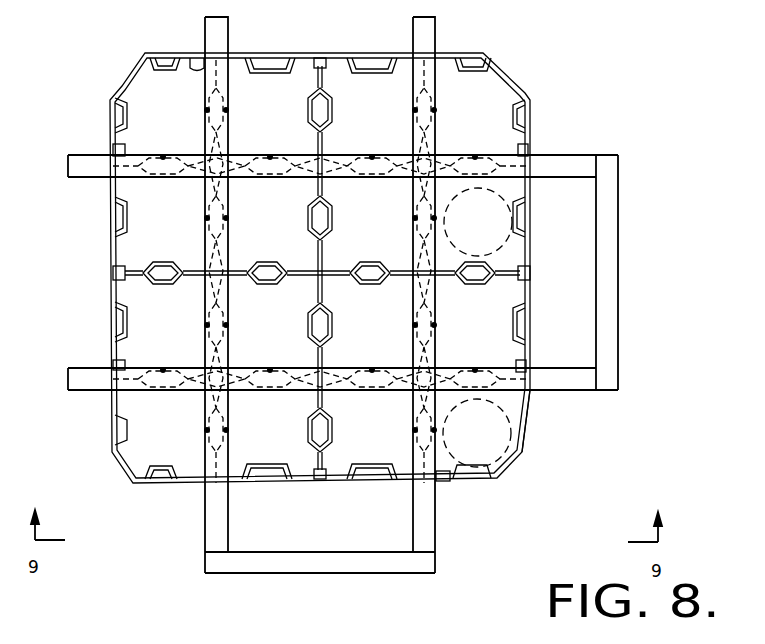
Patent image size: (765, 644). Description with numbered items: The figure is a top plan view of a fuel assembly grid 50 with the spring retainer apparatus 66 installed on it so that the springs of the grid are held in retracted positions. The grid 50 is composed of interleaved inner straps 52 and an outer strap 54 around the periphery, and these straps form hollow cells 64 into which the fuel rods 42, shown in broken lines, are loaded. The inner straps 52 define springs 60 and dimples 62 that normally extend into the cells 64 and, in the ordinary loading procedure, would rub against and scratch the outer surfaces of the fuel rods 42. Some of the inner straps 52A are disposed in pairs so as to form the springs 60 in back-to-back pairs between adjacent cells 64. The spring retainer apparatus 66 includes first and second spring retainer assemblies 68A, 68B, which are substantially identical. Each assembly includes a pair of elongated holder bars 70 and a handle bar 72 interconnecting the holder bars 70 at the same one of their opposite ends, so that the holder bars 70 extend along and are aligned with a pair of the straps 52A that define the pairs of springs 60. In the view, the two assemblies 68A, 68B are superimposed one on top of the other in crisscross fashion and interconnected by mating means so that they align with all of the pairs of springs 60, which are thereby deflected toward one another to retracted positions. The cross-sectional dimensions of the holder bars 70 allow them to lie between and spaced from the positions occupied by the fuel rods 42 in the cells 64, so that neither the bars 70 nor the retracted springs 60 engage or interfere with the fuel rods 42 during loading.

The fuel rods 42 is at (532, 256).
The grid 50 is at (525, 96).
The inner straps 52 is at (200, 294).
The inner straps disposed in pairs 52A is at (245, 343).
The outer strap 54 is at (530, 415).
The springs 60 is at (226, 431).
The dimples 62 is at (165, 262).
The cells 64 is at (357, 103).
The spring retainer apparatus 66 is at (538, 74).
The first spring retainer assembly 68A is at (618, 224).
The second spring retainer assembly 68B is at (392, 575).
The holder bars 70 is at (580, 157).
The handle bar 72 is at (618, 353).